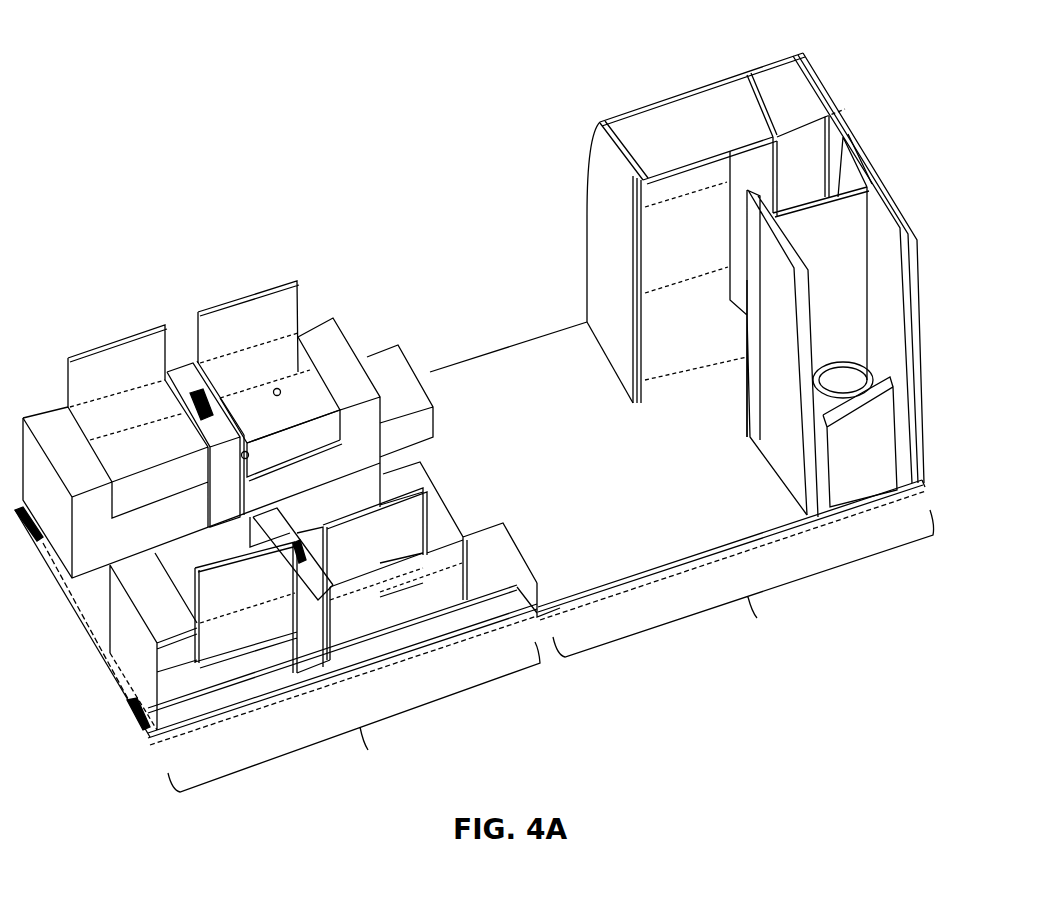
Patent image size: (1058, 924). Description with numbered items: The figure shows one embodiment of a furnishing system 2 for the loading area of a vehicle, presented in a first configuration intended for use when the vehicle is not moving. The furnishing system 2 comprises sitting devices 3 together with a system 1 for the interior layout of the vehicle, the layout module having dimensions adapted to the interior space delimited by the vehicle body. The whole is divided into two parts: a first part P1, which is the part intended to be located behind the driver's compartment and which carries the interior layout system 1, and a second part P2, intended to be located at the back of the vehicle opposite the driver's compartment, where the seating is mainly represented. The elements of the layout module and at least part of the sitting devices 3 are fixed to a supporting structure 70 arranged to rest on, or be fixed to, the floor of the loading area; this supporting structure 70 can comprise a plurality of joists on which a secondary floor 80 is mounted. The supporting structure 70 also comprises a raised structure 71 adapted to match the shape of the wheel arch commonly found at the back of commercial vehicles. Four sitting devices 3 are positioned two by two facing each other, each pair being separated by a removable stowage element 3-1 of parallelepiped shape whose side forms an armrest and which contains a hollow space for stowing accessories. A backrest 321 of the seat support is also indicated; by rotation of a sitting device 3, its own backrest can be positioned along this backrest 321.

The system for the interior layout of a vehicle 1 is at (679, 73).
The furnishing system 2 is at (120, 210).
The sitting device 3 is at (103, 330).
The removable stowage element 3-1 is at (181, 360).
The backrest of the seat support 321 is at (303, 370).
The supporting structure 70 is at (557, 610).
The raised structure 71 is at (409, 623).
The secondary floor 80 is at (500, 363).
The first part P1 is at (743, 589).
The second part P2 is at (354, 717).